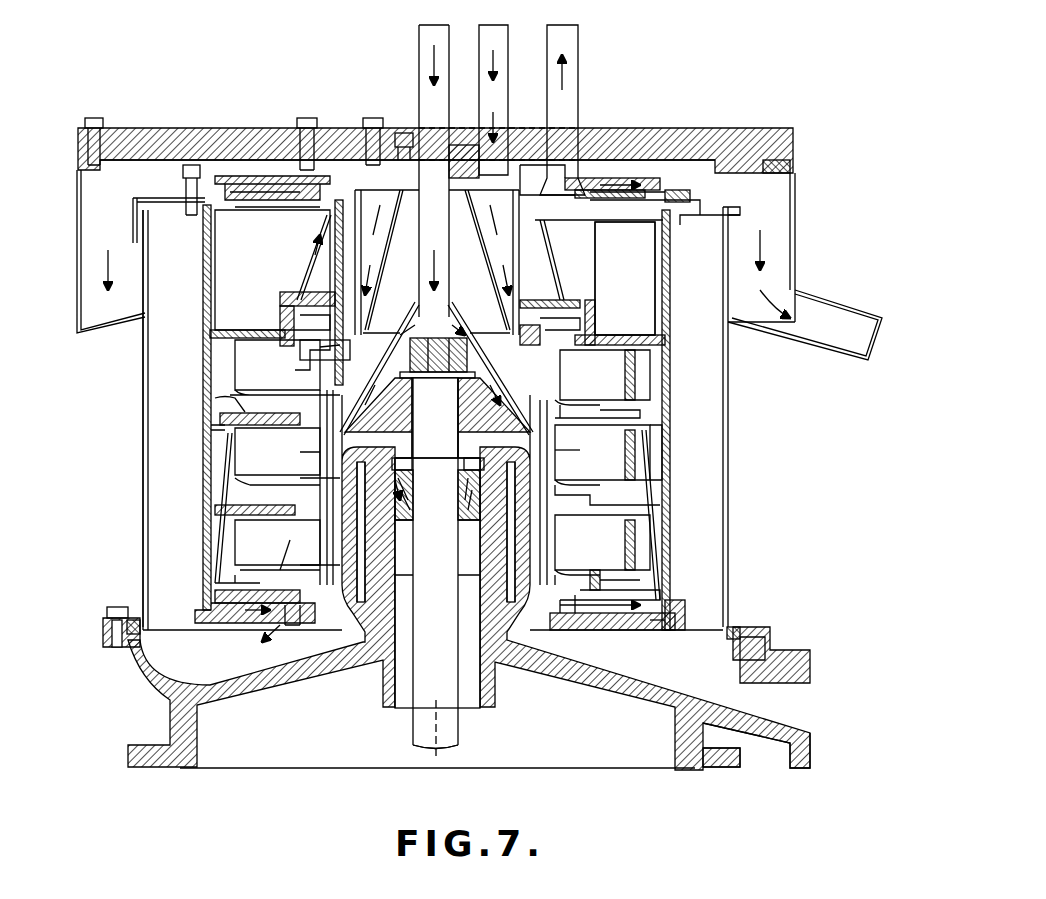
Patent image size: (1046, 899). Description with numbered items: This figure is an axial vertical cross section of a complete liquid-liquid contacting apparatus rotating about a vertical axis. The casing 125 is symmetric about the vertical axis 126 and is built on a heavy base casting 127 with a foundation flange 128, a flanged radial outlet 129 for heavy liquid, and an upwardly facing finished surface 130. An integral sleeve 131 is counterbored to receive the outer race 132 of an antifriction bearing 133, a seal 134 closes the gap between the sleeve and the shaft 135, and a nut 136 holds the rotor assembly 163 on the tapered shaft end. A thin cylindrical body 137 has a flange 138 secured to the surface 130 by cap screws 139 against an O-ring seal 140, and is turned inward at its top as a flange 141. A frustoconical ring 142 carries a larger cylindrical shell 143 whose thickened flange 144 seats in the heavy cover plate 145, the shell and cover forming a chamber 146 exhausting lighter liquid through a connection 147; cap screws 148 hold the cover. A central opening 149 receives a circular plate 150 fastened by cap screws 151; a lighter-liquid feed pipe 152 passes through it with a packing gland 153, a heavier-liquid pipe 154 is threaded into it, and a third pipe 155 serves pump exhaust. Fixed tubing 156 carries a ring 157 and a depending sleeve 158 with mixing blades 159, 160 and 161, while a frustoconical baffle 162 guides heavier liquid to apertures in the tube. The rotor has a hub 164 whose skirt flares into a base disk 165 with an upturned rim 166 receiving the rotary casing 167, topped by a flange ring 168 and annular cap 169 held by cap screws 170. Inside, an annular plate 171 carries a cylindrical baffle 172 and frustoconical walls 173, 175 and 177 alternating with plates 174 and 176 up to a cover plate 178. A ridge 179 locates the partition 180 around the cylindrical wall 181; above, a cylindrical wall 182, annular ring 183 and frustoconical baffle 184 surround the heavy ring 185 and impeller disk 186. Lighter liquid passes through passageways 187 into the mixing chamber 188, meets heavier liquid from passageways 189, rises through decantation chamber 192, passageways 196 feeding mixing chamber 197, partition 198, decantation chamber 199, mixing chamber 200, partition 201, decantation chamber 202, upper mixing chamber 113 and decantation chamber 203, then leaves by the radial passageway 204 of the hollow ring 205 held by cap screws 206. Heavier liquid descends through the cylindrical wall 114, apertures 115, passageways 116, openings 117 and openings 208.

The upper mixing chamber 113 is at (295, 305).
The cylindrical wall 114 is at (655, 238).
The apertures 115 is at (203, 336).
The passageways 116 is at (632, 408).
The openings 117 is at (203, 426).
The casing 125 is at (750, 467).
The vertical axis of symmetry 126 is at (440, 739).
The base casting 127 is at (290, 675).
The flange 128 is at (718, 762).
The flanged radial outlet 129 is at (740, 712).
The finished surface 130 is at (760, 627).
The sleeve 131 is at (480, 635).
The outer race 132 is at (470, 512).
The antifriction bearing 133 is at (405, 518).
The seal 134 is at (468, 450).
The shaft 135 is at (418, 746).
The nut 136 is at (468, 345).
The cylindrical body 137 is at (143, 495).
The flange 138 is at (738, 627).
The cap screw 139 is at (118, 650).
The O-ring seal 140 is at (740, 645).
The inward flange 141 is at (150, 218).
The frustoconical ring 142 is at (125, 327).
The cylindrical shell 143 is at (797, 233).
The inwardly-extending flange 144 is at (790, 167).
The cover plate 145 is at (750, 135).
The chamber 146 is at (762, 308).
The connection 147 is at (812, 352).
The cap screw 148 is at (93, 118).
The central opening 149 is at (398, 133).
The circular plate 150 is at (460, 195).
The cap screw 151 is at (368, 118).
The pipe 152 is at (419, 50).
The packing gland 153 is at (462, 145).
The pipe 154 is at (503, 63).
The pipe 155 is at (580, 63).
The tubing 156 is at (308, 252).
The ring 157 is at (340, 370).
The cylindrical sleeve 158 is at (545, 455).
The mixing blade 159 is at (565, 405).
The mixing blade 160 is at (568, 498).
The mixing blade 161 is at (558, 580).
The frustoconical baffle 162 is at (372, 265).
The rotor assembly 163 is at (242, 636).
The hub 164 is at (405, 405).
The base disk 165 is at (640, 625).
The upturned rim 166 is at (676, 605).
The rotary casing 167 is at (670, 355).
The flange ring 168 is at (682, 215).
The annular cap 169 is at (640, 190).
The cap screw 170 is at (192, 165).
The annular plate 171 is at (212, 583).
The cylindrical baffle 172 is at (440, 318).
The frustoconical wall 173 is at (208, 554).
The annular plate 174 is at (262, 513).
The frustoconical wall 175 is at (207, 460).
The annular plate 176 is at (250, 413).
The frustoconical wall 177 is at (210, 365).
The cover plate 178 is at (606, 338).
The circular ridge 179 is at (630, 595).
The annular partition 180 is at (596, 575).
The cylindrical wall 181 is at (600, 582).
The cylindrical wall 182 is at (280, 322).
The annular ring 183 is at (340, 298).
The frustoconical baffle 184 is at (548, 255).
The heavy ring 185 is at (525, 320).
The impeller disk 186 is at (570, 305).
The passageways 187 is at (295, 625).
The mixing chamber 188 is at (282, 552).
The passageways 189 is at (590, 610).
The decantation chamber 192 is at (608, 535).
The passageways 196 is at (632, 490).
The mixing chamber 197 is at (277, 451).
The annular partition 198 is at (320, 462).
The decantation chamber 199 is at (667, 445).
The mixing chamber 200 is at (213, 398).
The partition 201 is at (318, 362).
The decantation chamber 202 is at (619, 360).
The decantation chamber 203 is at (276, 262).
The radial passageway 204 is at (260, 200).
The hollow ring 205 is at (612, 185).
The cap screw 206 is at (307, 118).
The openings 208 is at (210, 512).